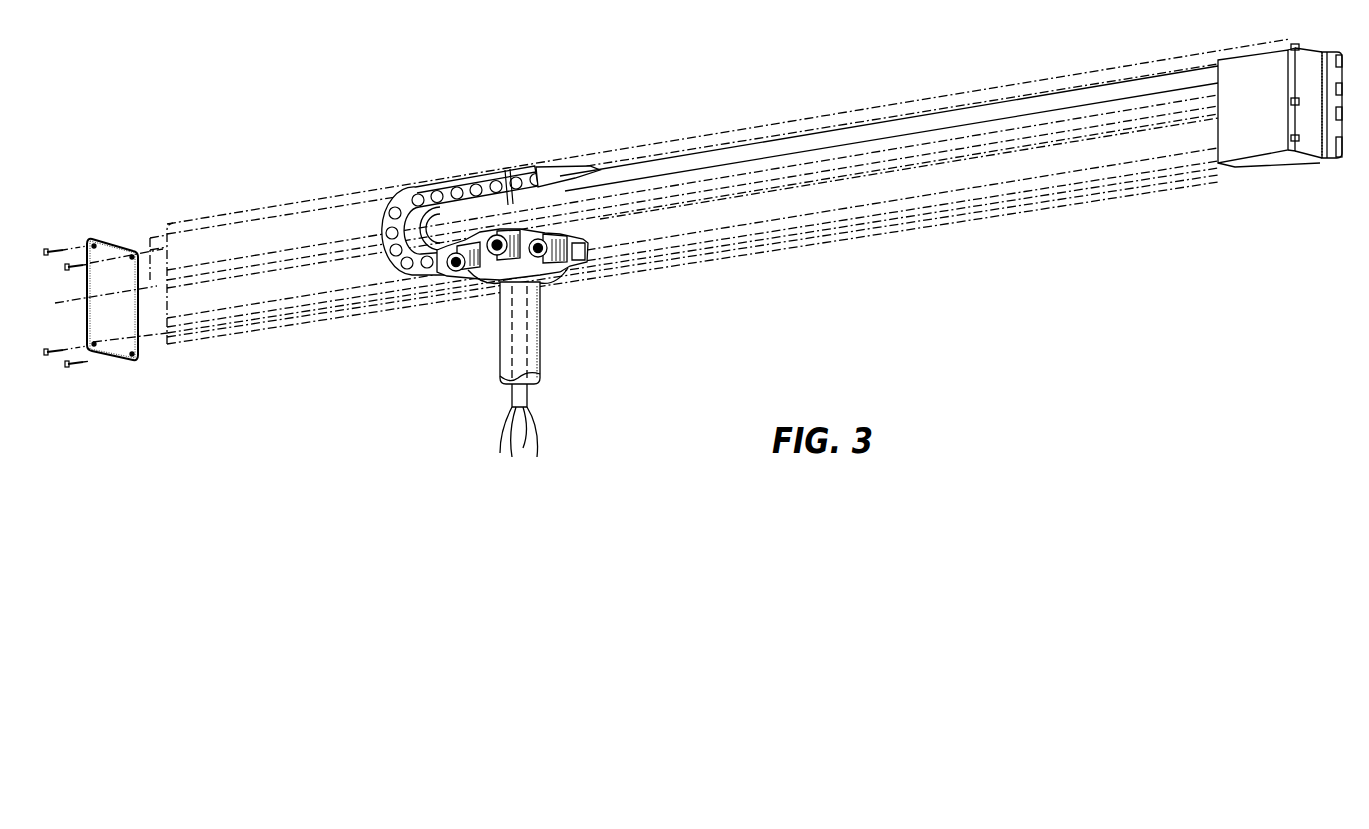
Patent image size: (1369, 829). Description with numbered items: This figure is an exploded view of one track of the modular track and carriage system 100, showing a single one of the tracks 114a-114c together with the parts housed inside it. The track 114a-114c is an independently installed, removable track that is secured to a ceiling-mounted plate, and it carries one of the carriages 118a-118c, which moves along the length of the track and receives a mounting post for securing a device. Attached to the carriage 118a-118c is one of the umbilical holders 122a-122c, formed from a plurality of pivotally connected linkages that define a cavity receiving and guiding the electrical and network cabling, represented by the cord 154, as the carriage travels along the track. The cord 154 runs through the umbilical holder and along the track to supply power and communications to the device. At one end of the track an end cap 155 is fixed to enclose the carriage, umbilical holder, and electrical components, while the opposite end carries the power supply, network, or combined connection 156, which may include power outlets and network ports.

The modular track and carriage system 100 is at (1006, 306).
The tracks 114a-114c is at (327, 330).
The carriages 118a-118c is at (575, 234).
The umbilical holders 122a-122c is at (437, 186).
The cord 154 is at (595, 177).
The end cap 155 is at (112, 260).
The connection 156 is at (1235, 128).